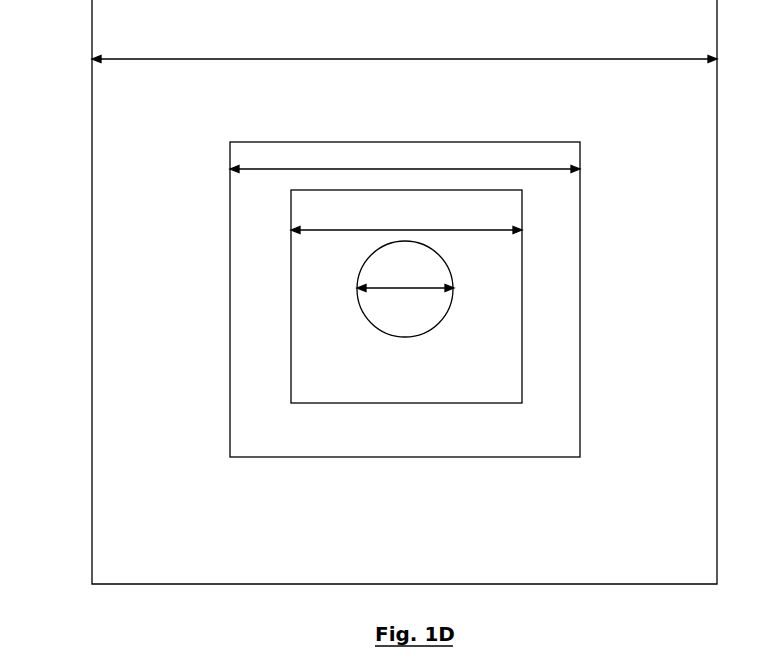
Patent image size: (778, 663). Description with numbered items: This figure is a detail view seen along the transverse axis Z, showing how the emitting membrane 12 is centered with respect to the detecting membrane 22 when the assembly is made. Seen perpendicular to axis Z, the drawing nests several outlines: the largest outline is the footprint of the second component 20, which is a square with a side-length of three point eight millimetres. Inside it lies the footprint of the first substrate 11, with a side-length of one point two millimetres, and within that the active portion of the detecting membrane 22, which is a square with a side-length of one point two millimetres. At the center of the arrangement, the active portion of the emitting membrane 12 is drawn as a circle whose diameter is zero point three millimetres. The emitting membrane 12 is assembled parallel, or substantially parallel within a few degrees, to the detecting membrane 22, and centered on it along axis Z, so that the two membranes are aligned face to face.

The second component 20 is at (107, 39).
The first substrate 11 is at (243, 207).
The detecting membrane 22 is at (315, 272).
The emitting membrane 12 is at (395, 324).